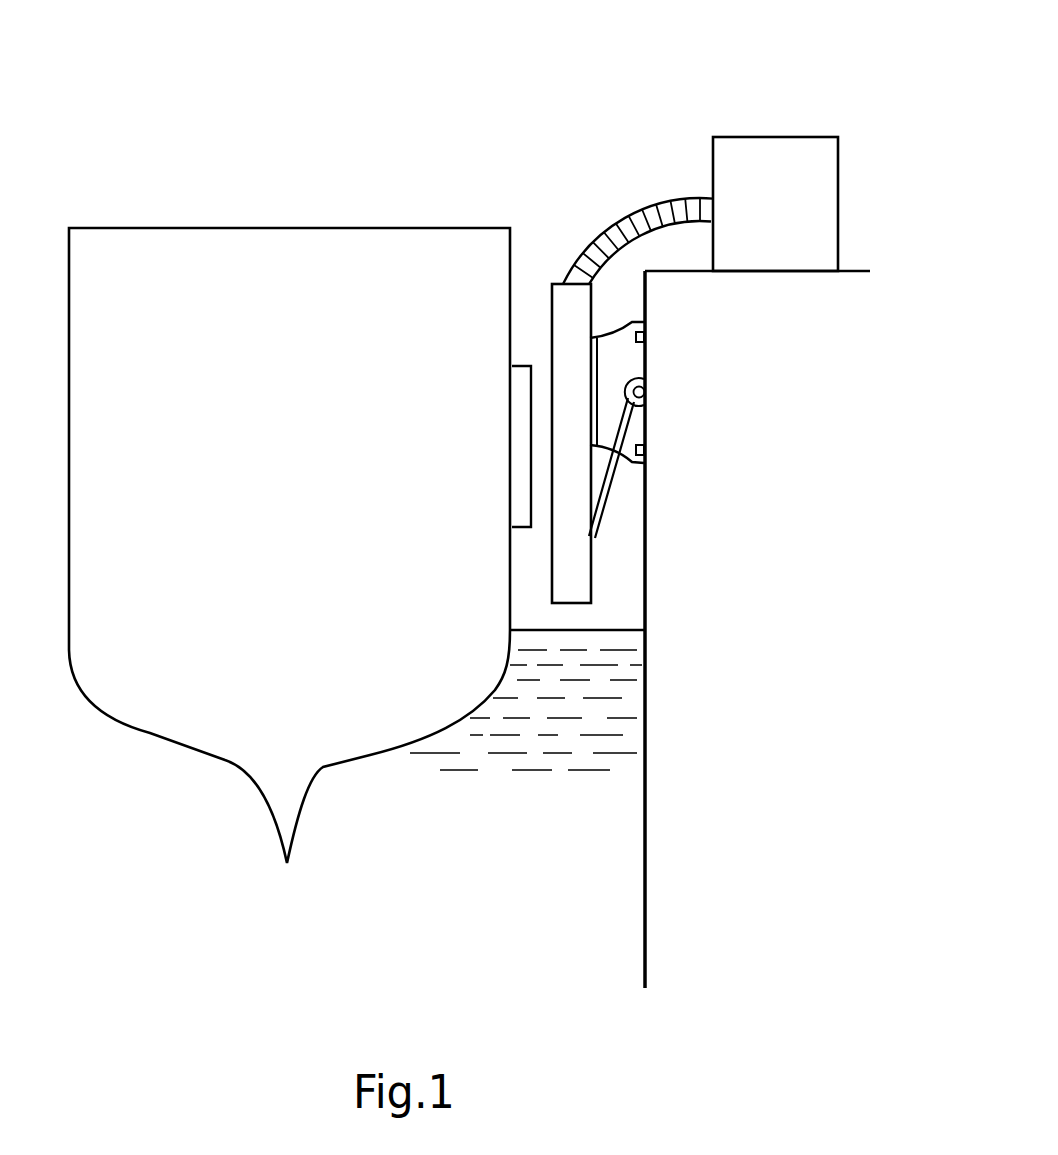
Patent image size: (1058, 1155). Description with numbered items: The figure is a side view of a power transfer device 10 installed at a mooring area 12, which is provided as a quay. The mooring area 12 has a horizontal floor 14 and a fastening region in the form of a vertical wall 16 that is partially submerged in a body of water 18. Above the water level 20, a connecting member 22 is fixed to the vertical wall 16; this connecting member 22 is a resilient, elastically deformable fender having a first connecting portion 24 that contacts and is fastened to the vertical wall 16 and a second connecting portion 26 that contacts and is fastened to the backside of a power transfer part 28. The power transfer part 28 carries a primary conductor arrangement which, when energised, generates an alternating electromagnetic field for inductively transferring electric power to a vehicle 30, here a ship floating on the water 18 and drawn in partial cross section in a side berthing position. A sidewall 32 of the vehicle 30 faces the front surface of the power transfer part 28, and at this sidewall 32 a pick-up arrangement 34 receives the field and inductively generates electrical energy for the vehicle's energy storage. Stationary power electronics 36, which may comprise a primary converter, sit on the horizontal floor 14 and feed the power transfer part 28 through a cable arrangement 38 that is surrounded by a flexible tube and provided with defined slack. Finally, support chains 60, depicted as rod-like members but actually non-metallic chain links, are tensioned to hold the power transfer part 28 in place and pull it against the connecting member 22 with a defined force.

The power transfer device 10 is at (594, 74).
The mooring area 12 is at (878, 157).
The horizontal floor 14 is at (855, 272).
The vertical wall 16 is at (648, 553).
The body of water 18 is at (572, 728).
The water level 20 is at (598, 628).
The connecting member 22 is at (615, 353).
The first connecting portion 24 is at (636, 325).
The second connecting portion 26 is at (588, 323).
The power transfer part 28 is at (563, 312).
The vehicle 30 is at (96, 247).
The sidewall 32 is at (512, 597).
The pick-up arrangement 34 is at (520, 468).
The power electronics 36 is at (784, 155).
The cable arrangement 38 is at (653, 207).
The support chains 60 is at (608, 485).